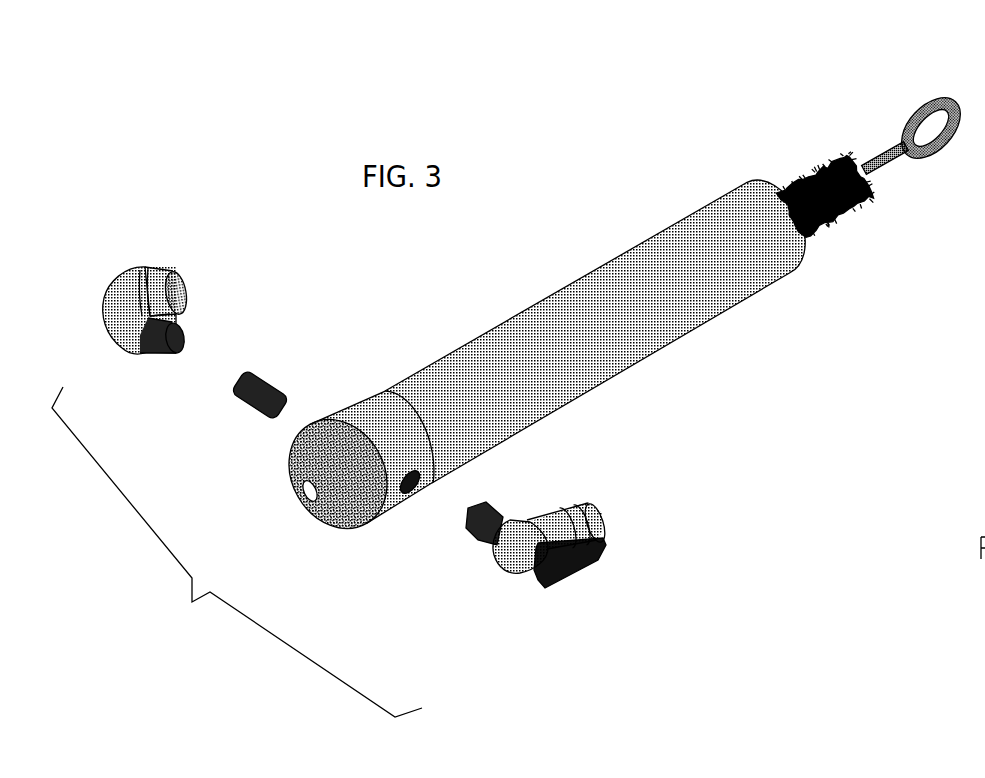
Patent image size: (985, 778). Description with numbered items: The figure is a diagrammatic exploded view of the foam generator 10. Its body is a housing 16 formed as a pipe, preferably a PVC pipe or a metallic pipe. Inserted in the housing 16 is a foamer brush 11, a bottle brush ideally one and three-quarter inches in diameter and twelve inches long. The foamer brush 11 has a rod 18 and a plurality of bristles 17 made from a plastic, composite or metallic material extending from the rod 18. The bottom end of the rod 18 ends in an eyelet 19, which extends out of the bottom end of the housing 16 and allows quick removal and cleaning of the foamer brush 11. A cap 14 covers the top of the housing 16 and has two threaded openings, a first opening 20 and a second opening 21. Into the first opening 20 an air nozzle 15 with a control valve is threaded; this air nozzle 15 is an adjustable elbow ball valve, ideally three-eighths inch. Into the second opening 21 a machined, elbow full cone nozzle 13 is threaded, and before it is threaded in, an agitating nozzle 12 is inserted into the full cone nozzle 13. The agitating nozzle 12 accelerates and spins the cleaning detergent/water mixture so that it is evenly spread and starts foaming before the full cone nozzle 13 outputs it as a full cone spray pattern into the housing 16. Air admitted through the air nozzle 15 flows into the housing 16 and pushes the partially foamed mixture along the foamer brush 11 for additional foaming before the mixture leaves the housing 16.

The foam generator 10 is at (780, 333).
The foamer brush 11 is at (882, 145).
The agitating nozzle 12 is at (290, 378).
The full cone nozzle 13 is at (195, 282).
The cap 14 is at (299, 519).
The air nozzle 15 is at (610, 508).
The housing 16 is at (611, 250).
The bristles 17 is at (793, 178).
The rod 18 is at (893, 161).
The eyelet 19 is at (957, 103).
The first opening 20 is at (412, 487).
The second opening 21 is at (288, 468).